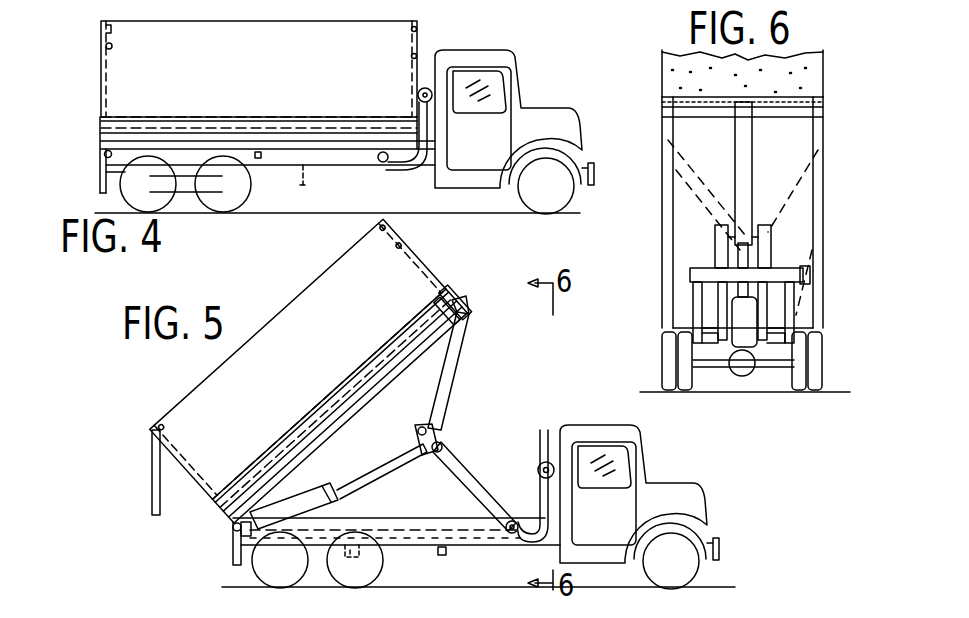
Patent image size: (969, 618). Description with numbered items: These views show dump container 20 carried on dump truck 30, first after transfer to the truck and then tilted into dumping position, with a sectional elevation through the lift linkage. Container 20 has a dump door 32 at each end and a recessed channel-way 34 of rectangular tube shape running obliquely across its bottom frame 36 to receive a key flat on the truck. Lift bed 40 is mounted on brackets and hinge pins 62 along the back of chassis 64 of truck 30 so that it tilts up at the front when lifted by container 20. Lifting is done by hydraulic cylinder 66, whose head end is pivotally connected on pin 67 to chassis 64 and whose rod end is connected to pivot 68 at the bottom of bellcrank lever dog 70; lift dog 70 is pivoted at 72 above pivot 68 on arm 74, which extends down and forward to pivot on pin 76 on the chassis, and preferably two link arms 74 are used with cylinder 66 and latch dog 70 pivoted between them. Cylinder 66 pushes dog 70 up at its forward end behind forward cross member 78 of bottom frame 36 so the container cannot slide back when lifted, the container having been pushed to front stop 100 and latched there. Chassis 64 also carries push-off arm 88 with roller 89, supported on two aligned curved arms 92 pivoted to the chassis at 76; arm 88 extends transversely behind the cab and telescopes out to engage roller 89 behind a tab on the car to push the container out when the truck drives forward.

In FIG. 4, the dump container 20 is at (101, 78).
In FIG. 5, the dump container 20 is at (199, 385).
In FIG. 6, the dump container 20 is at (808, 72).
In FIG. 4, the dump truck 30 is at (560, 110).
In FIG. 5, the dump truck 30 is at (639, 486).
In FIG. 6, the dump truck 30 is at (818, 348).
In FIG. 4, the dump door 32 is at (101, 46).
In FIG. 5, the dump door 32 is at (152, 472).
In FIG. 6, the channel-way 34 is at (806, 235).
In FIG. 4, the bottom frame 36 is at (101, 126).
In FIG. 5, the bottom frame 36 is at (216, 513).
In FIG. 4, the lift bed 40 is at (101, 146).
In FIG. 5, the lift bed 40 is at (470, 315).
In FIG. 6, the lift bed 40 is at (823, 172).
In FIG. 4, the hinge pins 62 is at (101, 166).
In FIG. 5, the hinge pins 62 is at (230, 536).
In FIG. 4, the chassis 64 is at (337, 182).
In FIG. 5, the chassis 64 is at (433, 546).
In FIG. 5, the hydraulic cylinder 66 is at (308, 497).
In FIG. 6, the hydraulic cylinder 66 is at (745, 372).
In FIG. 5, the pin 67 is at (228, 558).
In FIG. 5, the pivot 68 is at (442, 444).
In FIG. 5, the lift dog 70 is at (455, 356).
In FIG. 6, the lift dog 70 is at (751, 172).
In FIG. 5, the pivot 72 is at (417, 430).
In FIG. 5, the arm 74 is at (468, 462).
In FIG. 6, the arm 74 is at (755, 210).
In FIG. 5, the pin 76 is at (513, 518).
In FIG. 6, the pin 76 is at (733, 375).
In FIG. 5, the forward cross member 78 is at (470, 300).
In FIG. 6, the forward cross member 78 is at (808, 107).
In FIG. 5, the push-off arm 88 is at (548, 462).
In FIG. 6, the push-off arm 88 is at (690, 273).
In FIG. 6, the roller 89 is at (812, 275).
In FIG. 4, the curved arms 92 is at (396, 170).
In FIG. 5, the curved arms 92 is at (532, 543).
In FIG. 6, the curved arms 92 is at (693, 306).
In FIG. 5, the front stop 100 is at (457, 289).